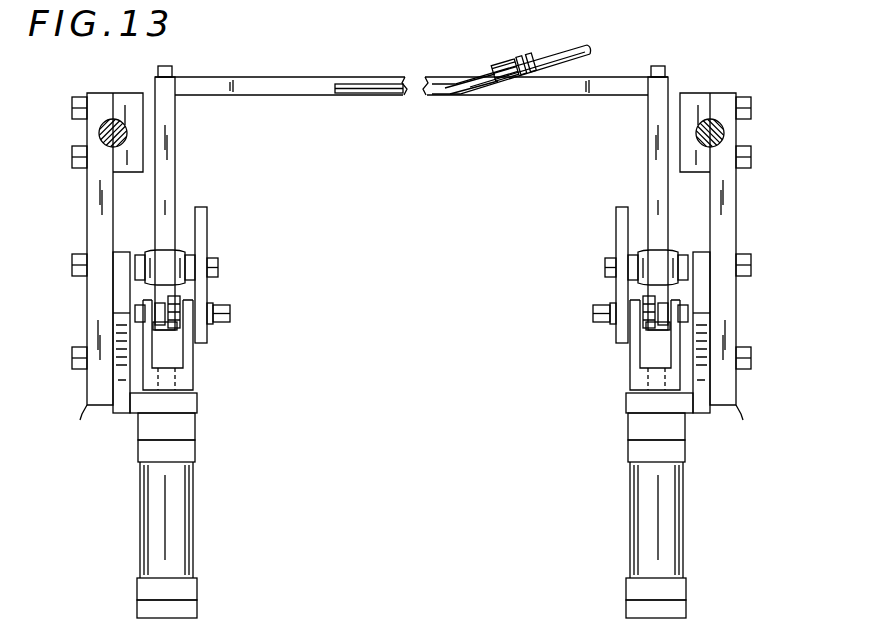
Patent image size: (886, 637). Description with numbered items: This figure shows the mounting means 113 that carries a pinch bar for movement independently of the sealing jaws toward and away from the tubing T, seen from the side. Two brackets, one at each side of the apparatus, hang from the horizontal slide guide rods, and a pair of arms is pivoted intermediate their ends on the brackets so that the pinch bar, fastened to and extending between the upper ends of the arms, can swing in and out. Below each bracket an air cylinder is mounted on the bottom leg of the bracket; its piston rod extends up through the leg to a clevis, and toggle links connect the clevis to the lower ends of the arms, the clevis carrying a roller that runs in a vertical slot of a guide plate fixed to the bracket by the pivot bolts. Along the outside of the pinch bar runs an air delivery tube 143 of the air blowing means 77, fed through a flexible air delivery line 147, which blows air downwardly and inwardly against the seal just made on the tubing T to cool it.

The tubing T is at (289, 80).
The air blowing means 77 is at (492, 103).
The mounting means 113 is at (86, 249).
The air delivery tube 143 is at (378, 84).
The flexible air delivery line 147 is at (558, 52).